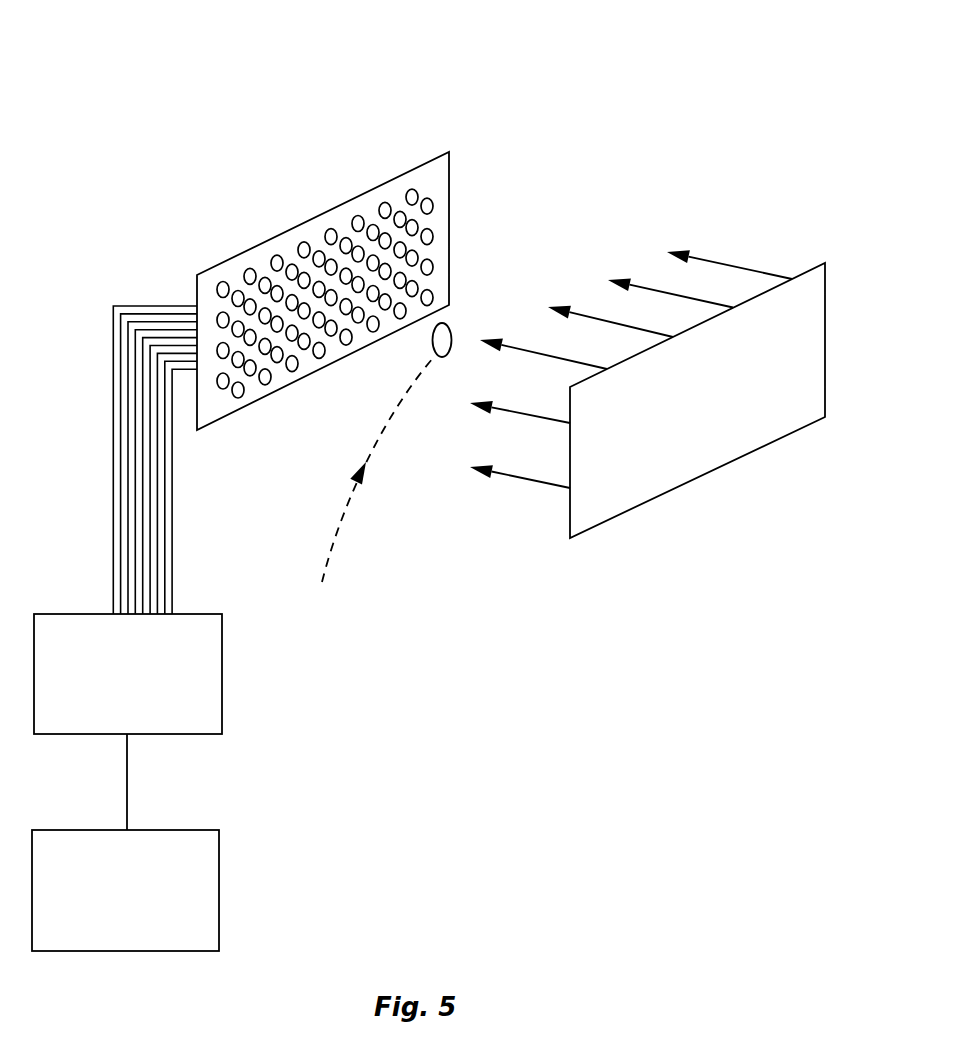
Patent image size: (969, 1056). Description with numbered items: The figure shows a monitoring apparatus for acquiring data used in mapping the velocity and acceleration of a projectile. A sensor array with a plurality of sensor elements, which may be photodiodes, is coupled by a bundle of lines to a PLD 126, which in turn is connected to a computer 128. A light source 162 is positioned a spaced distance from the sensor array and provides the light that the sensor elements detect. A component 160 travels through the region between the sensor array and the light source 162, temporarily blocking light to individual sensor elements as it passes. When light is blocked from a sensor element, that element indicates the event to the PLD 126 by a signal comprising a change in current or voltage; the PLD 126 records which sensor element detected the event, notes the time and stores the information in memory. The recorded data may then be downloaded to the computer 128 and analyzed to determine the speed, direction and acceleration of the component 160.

The PLD 126 is at (222, 670).
The computer 128 is at (220, 868).
The component 160 is at (441, 357).
The light source 162 is at (677, 487).